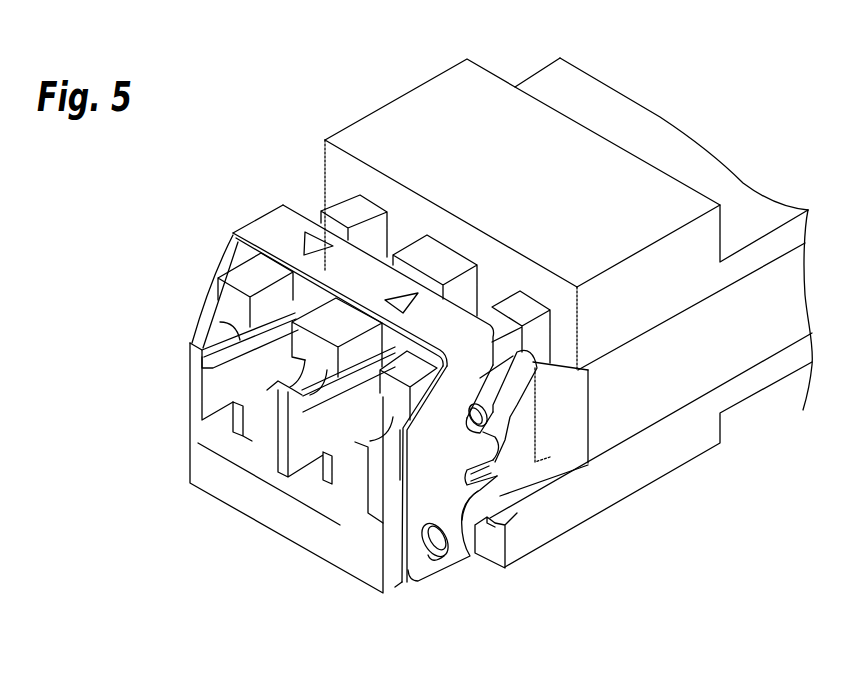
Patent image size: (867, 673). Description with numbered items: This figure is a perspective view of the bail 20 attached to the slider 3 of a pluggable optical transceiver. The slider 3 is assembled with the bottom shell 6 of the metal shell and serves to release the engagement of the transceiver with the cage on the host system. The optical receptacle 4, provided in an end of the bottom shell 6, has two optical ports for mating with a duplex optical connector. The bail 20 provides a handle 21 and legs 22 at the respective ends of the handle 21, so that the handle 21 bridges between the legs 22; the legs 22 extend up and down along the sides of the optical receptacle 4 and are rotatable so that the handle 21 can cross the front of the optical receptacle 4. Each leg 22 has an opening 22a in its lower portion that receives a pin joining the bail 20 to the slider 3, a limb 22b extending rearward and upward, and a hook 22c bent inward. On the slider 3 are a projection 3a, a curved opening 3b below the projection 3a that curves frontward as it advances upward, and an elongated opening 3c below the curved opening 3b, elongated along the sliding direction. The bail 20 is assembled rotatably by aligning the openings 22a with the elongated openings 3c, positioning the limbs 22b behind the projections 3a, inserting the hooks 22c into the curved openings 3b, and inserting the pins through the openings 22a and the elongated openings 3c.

The slider 3 is at (574, 496).
The projection 3a is at (505, 422).
The curved opening 3b is at (538, 522).
The elongated opening 3c is at (430, 560).
The optical receptacle 4 is at (267, 510).
The bottom shell 6 is at (550, 527).
The bail 20 is at (302, 345).
The handle 21 is at (373, 272).
The legs 22 is at (193, 330).
The openings 22a is at (440, 555).
The limbs 22b is at (525, 372).
The hooks 22c is at (495, 467).